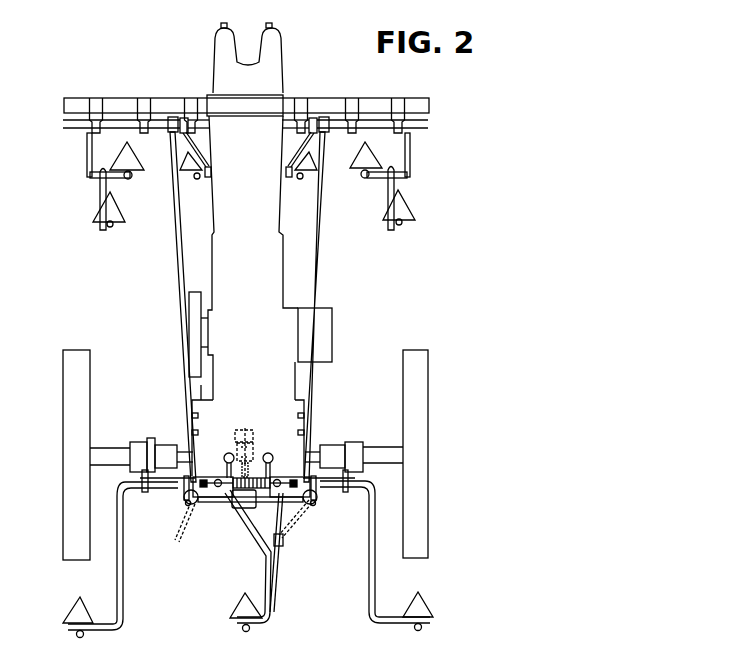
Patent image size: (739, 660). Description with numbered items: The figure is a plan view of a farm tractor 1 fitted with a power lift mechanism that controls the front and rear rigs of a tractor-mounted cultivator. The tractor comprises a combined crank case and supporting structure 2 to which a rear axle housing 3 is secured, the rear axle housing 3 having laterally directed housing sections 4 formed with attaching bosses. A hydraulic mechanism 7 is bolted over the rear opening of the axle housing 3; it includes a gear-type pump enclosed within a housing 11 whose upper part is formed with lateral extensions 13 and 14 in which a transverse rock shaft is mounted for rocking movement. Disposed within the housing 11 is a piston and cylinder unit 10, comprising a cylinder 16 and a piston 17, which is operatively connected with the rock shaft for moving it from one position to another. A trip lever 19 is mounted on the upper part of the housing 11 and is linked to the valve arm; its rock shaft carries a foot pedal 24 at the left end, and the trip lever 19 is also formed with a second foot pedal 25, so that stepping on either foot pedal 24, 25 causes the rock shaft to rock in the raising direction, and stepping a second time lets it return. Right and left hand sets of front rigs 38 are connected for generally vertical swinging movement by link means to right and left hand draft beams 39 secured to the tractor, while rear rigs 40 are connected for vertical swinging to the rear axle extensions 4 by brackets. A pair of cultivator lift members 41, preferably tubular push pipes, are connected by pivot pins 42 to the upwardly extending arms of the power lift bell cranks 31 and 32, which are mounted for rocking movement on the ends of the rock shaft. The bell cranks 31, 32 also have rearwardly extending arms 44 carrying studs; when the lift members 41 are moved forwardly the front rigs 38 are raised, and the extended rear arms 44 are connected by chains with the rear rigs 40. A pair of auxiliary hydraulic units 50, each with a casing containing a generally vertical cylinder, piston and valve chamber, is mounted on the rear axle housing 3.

The farm tractor 1 is at (326, 271).
The combined crank case and supporting structure 2 is at (217, 385).
The rear axle housing 3 is at (329, 440).
The laterally directed housing sections 4 is at (203, 478).
The hydraulic mechanism 7 is at (243, 518).
The piston and cylinder unit 10 is at (246, 424).
The housing 11 is at (230, 493).
The lateral extension 13 is at (210, 474).
The lateral extension 14 is at (288, 477).
The cylinder 16 is at (252, 431).
The piston 17 is at (238, 431).
The trip lever 19 is at (256, 503).
The foot pedal 24 is at (227, 454).
The second foot pedal 25 is at (269, 454).
The power lift bell crank 31 is at (186, 494).
The power lift bell crank 32 is at (314, 492).
The front rigs 38 is at (76, 185).
The draft beams 39 is at (117, 106).
The rear rigs 40 is at (128, 607).
The cultivator lift members 41 is at (180, 270).
The pivot pins 42 is at (190, 478).
The rearwardly extending arms 44 is at (196, 522).
The auxiliary hydraulic unit 50 is at (186, 505).